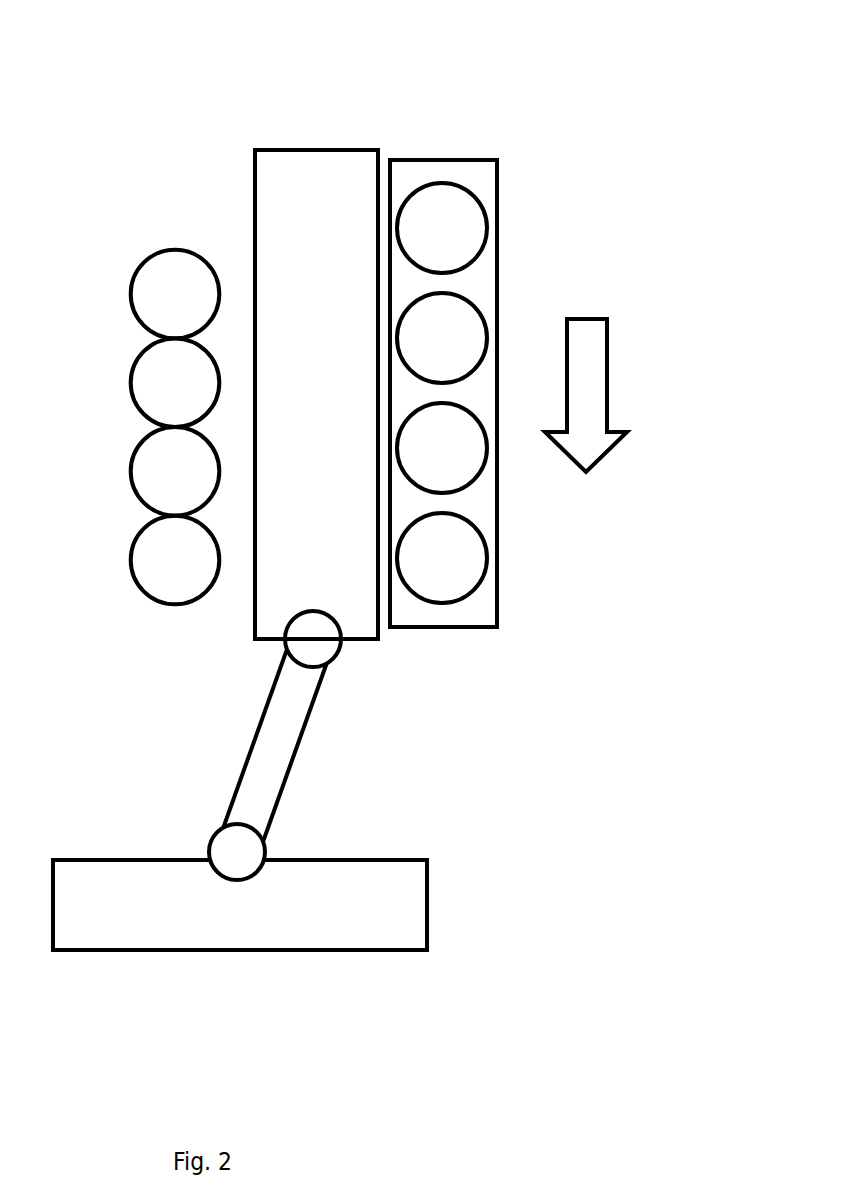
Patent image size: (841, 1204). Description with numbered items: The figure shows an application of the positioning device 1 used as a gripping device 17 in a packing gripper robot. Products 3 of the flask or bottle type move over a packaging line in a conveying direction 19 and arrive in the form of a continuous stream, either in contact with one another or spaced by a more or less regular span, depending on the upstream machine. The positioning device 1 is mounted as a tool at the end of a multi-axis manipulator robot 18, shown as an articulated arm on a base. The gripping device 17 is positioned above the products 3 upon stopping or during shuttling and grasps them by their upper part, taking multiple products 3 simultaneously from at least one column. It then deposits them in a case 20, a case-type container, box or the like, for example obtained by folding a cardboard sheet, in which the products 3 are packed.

The positioning device 1 is at (340, 358).
The products 3 is at (168, 288).
The gripping device 17 is at (320, 780).
The multi-axis manipulator robot 18 is at (276, 747).
The conveying direction 19 is at (580, 388).
The case 20 is at (420, 150).